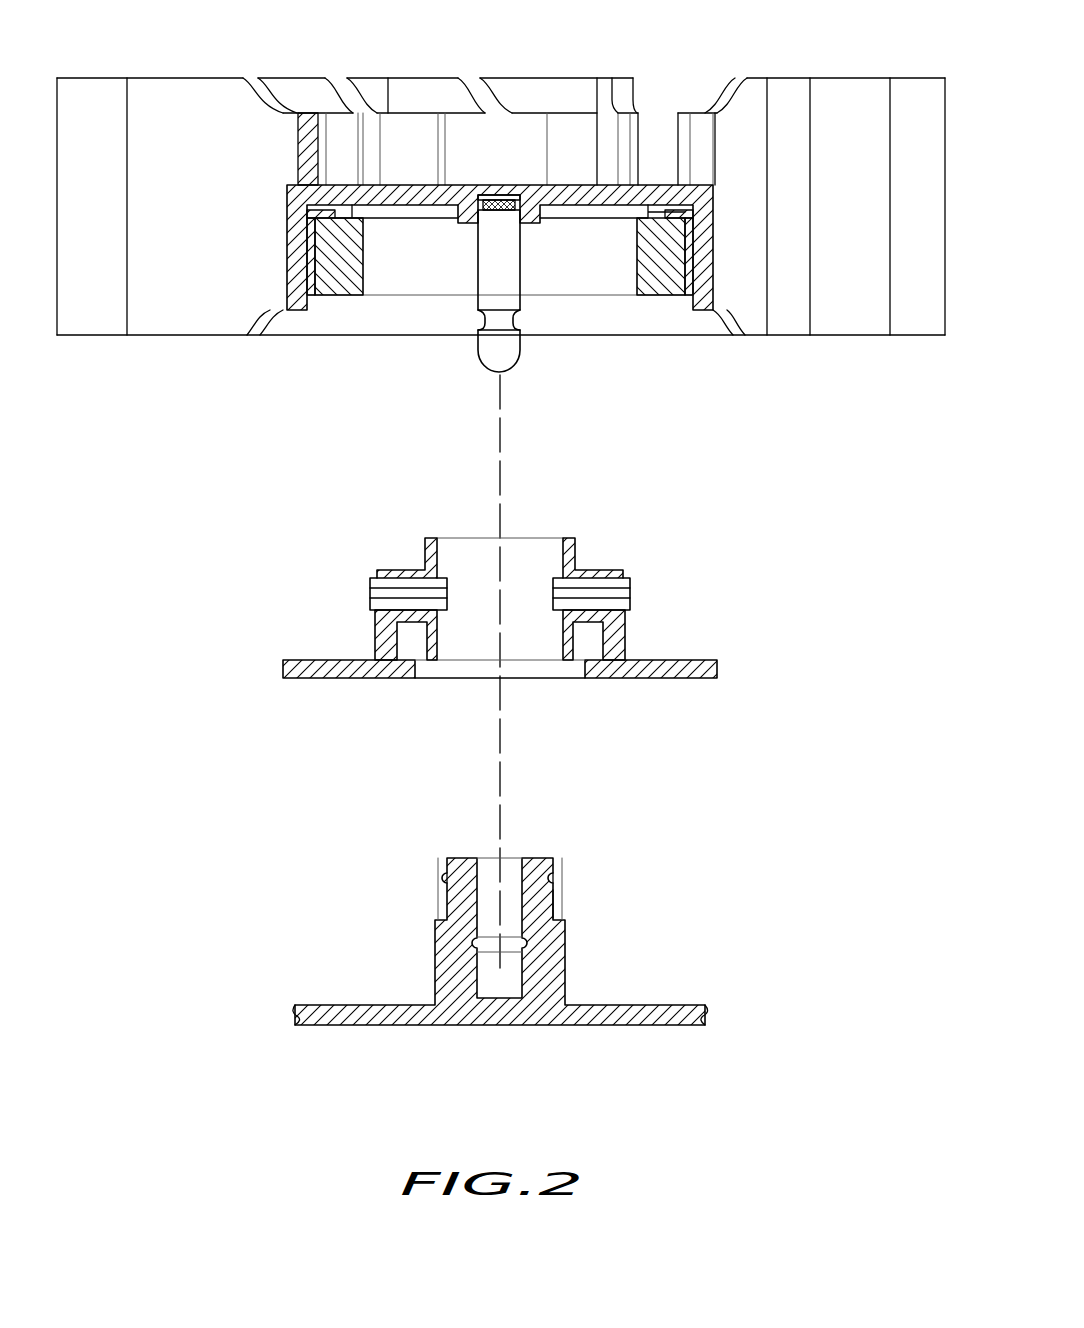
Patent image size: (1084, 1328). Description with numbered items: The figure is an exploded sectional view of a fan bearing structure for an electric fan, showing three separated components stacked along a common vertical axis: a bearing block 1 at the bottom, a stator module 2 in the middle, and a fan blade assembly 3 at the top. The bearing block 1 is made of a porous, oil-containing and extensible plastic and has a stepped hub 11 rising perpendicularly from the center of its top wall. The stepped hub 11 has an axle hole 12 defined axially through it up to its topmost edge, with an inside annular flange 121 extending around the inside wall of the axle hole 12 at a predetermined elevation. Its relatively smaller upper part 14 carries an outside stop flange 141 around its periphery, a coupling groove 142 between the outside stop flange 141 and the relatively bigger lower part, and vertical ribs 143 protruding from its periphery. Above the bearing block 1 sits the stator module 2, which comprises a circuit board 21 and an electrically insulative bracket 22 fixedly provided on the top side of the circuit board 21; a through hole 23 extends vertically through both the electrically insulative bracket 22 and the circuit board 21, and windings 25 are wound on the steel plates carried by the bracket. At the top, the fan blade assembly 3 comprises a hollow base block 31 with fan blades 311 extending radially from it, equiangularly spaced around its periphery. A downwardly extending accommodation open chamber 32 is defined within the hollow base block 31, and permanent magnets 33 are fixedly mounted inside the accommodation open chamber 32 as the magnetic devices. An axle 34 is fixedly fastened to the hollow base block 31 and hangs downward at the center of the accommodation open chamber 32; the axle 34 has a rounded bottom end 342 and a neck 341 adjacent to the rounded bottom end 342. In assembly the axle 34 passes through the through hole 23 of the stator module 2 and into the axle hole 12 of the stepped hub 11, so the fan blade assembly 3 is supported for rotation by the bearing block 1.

The bearing block 1 is at (357, 820).
The stepped hub 11 is at (448, 955).
The axle hole 12 is at (512, 868).
The inside annular flange 121 is at (520, 942).
The relatively smaller upper part 14 is at (460, 862).
The outside stop flange 141 is at (553, 878).
The coupling groove 142 is at (553, 898).
The vertical ribs 143 is at (440, 895).
The stator module 2 is at (362, 560).
The circuit board 21 is at (682, 675).
The electrically insulative bracket 22 is at (625, 632).
The through hole 23 is at (556, 550).
The windings 25 is at (630, 585).
The fan blade assembly 3 is at (235, 66).
The hollow base block 31 is at (575, 193).
The fan blades 311 is at (833, 90).
The accommodation open chamber 32 is at (567, 282).
The permanent magnets 33 is at (660, 290).
The axle 34 is at (512, 287).
The neck 341 is at (483, 320).
The rounded bottom end 342 is at (492, 372).